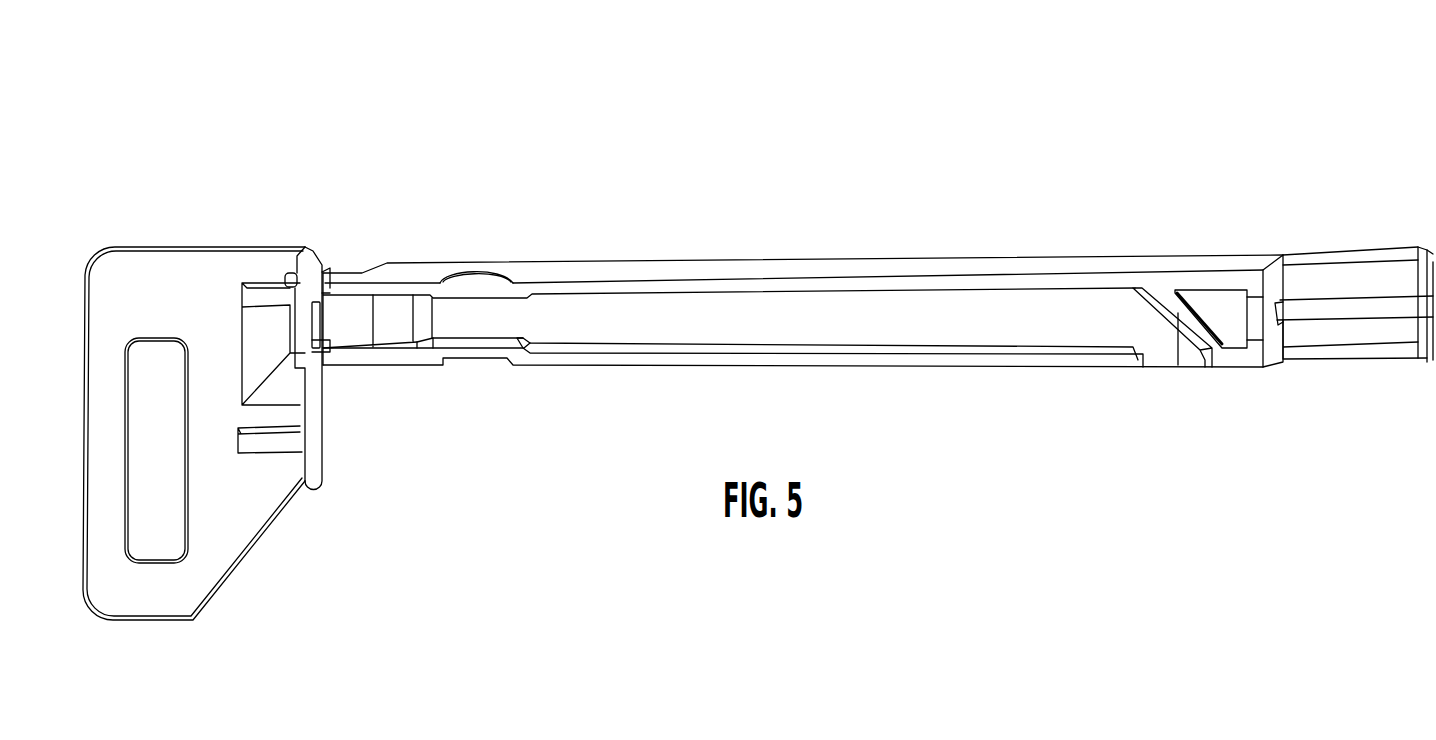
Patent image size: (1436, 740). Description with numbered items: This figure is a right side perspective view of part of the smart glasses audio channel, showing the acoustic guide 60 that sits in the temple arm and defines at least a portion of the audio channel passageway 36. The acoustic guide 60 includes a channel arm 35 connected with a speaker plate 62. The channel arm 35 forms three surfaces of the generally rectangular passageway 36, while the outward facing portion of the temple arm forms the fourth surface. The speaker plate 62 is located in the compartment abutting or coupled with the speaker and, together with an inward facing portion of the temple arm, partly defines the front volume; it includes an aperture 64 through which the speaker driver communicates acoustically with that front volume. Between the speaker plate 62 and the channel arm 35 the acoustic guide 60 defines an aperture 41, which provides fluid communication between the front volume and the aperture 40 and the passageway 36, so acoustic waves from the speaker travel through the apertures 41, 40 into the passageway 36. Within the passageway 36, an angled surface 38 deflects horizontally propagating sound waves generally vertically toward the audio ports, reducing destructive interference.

The acoustic guide 60 is at (620, 126).
The channel arm 35 is at (756, 257).
The passageway 36 is at (998, 302).
The angled surface 38 is at (1172, 308).
The aperture 40 is at (381, 309).
The aperture 41 is at (320, 288).
The speaker plate 62 is at (148, 280).
The aperture 64 is at (178, 551).